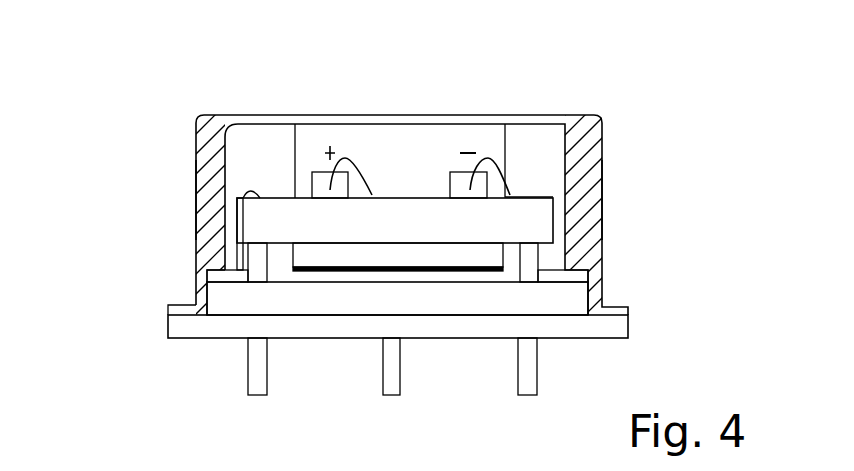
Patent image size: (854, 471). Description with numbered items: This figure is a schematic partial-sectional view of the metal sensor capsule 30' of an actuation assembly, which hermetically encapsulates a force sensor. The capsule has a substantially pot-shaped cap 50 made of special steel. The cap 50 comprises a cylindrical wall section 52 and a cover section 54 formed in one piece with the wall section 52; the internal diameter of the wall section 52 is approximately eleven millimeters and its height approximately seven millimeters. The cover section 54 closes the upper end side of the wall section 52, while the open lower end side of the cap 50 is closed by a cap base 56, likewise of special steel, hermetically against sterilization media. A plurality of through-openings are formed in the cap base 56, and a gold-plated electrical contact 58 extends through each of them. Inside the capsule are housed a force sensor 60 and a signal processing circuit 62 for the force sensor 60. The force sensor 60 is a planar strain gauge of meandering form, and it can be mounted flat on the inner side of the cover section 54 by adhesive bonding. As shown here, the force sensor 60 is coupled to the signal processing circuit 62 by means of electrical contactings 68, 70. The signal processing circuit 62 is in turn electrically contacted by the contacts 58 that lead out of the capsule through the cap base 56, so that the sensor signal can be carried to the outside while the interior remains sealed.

The sensor capsule 30' is at (699, 185).
The cap 50 is at (190, 99).
The wall section 52 is at (210, 205).
The cover section 54 is at (303, 117).
The cap base 56 is at (553, 327).
The electrical contact 58 is at (248, 377).
The force sensor 60 is at (400, 170).
The signal processing circuit 62 is at (308, 215).
The electrical contacting 68 is at (506, 168).
The electrical contacting 70 is at (355, 160).